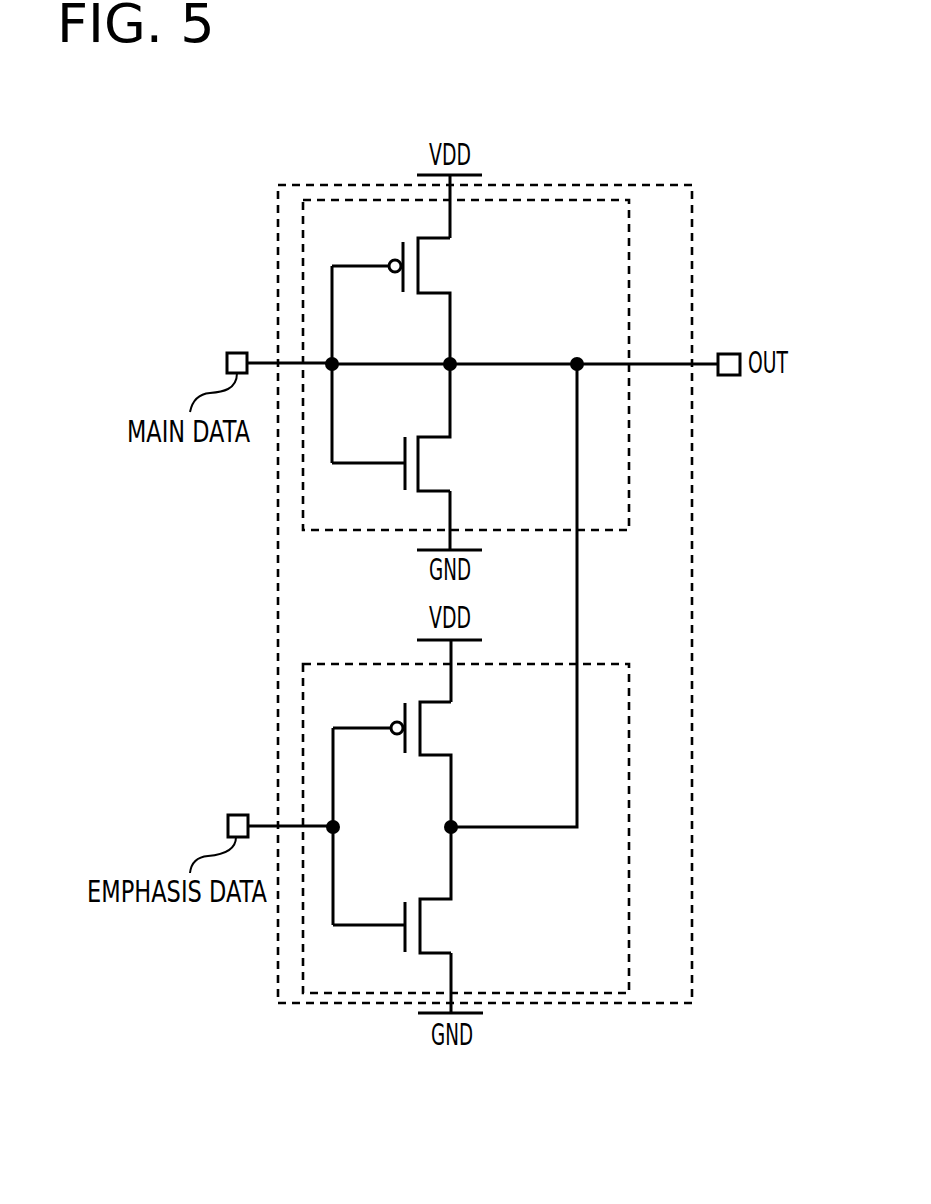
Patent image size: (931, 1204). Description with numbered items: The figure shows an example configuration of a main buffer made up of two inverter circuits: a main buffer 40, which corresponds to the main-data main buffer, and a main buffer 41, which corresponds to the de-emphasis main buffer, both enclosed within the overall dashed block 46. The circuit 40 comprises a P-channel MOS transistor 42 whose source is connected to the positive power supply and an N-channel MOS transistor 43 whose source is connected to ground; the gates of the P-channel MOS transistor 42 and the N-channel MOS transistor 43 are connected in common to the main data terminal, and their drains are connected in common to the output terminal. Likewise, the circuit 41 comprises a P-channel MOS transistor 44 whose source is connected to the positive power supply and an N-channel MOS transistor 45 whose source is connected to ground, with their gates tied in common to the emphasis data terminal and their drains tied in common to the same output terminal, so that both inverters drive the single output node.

The main buffer 40 is at (629, 237).
The main buffer 41 is at (590, 664).
The P-channel MOS transistor 42 is at (437, 266).
The N-channel MOS transistor 43 is at (437, 468).
The P-channel MOS transistor 44 is at (439, 728).
The N-channel MOS transistor 45 is at (437, 930).
The output driver circuit 46 is at (640, 185).